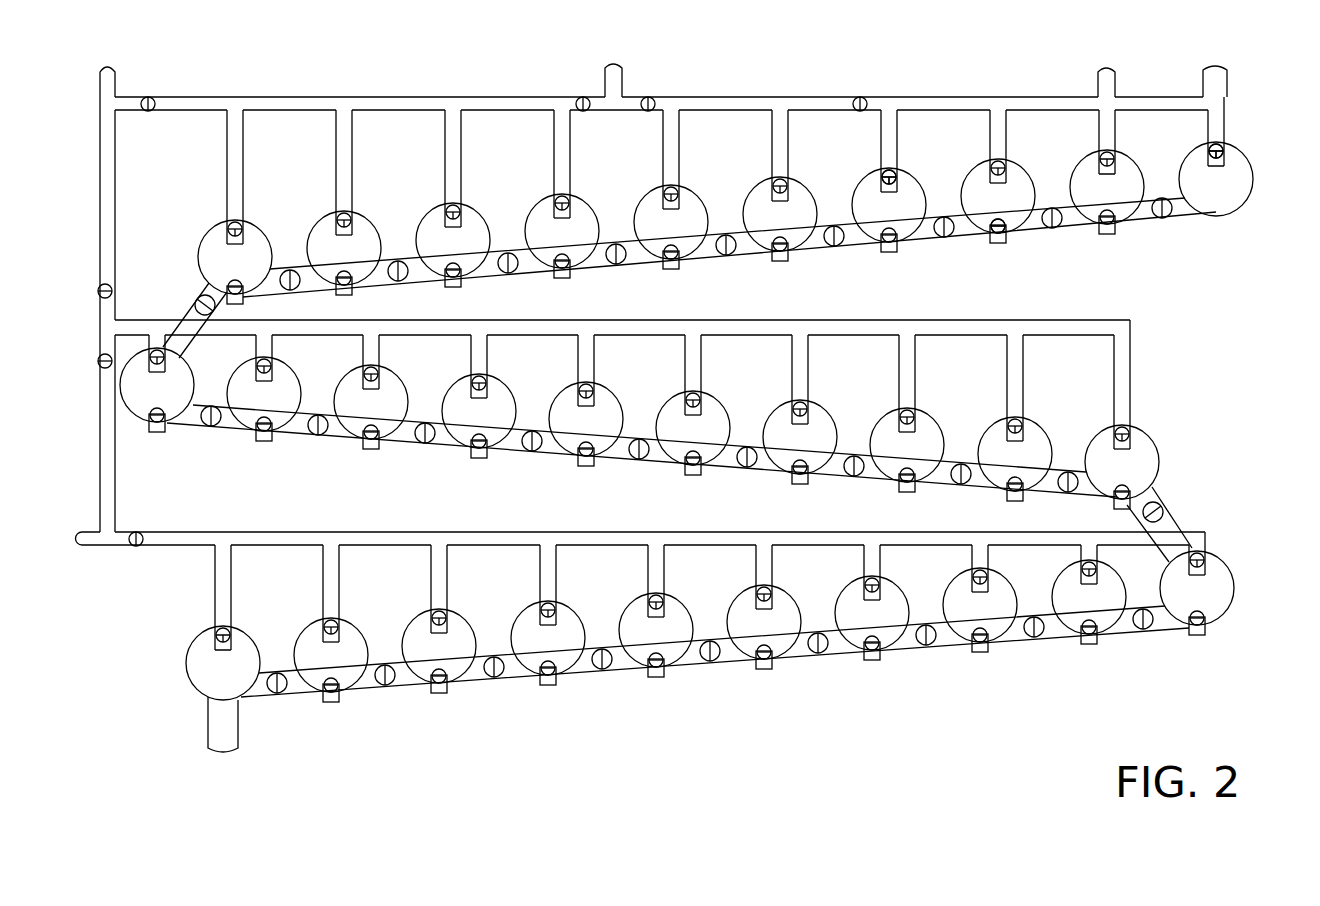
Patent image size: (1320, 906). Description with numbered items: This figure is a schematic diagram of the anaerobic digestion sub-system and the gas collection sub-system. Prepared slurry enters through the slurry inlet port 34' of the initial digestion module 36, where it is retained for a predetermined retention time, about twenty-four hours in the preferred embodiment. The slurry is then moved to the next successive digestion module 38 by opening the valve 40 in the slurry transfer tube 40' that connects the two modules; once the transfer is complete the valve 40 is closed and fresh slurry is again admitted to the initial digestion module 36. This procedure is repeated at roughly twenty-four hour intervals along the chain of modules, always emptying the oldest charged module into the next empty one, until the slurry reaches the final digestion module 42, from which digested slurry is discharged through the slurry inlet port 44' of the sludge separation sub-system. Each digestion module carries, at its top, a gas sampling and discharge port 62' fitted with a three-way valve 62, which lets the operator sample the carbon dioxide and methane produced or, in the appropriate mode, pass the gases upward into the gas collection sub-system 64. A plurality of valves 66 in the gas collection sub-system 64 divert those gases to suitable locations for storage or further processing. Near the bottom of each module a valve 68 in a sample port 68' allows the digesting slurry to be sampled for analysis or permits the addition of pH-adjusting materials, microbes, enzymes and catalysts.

The slurry inlet port 34' is at (1249, 76).
The initial digestion module 36 is at (1236, 199).
The next successive digestion module 38 is at (1082, 175).
The valve 40 is at (695, 447).
The slurry transfer tube 40' is at (716, 445).
The final digestion module 42 is at (203, 655).
The slurry inlet port 44' is at (264, 727).
The three-way valve 62 is at (1081, 147).
The gas sampling and discharge port 62' is at (1101, 169).
The gas collection sub-system 64 is at (757, 104).
The valves 66 is at (148, 104).
The valve 68 is at (1022, 243).
The sample port 68' is at (976, 248).